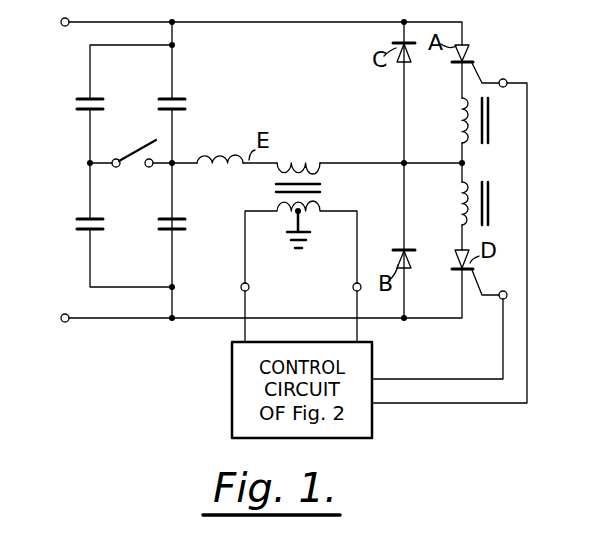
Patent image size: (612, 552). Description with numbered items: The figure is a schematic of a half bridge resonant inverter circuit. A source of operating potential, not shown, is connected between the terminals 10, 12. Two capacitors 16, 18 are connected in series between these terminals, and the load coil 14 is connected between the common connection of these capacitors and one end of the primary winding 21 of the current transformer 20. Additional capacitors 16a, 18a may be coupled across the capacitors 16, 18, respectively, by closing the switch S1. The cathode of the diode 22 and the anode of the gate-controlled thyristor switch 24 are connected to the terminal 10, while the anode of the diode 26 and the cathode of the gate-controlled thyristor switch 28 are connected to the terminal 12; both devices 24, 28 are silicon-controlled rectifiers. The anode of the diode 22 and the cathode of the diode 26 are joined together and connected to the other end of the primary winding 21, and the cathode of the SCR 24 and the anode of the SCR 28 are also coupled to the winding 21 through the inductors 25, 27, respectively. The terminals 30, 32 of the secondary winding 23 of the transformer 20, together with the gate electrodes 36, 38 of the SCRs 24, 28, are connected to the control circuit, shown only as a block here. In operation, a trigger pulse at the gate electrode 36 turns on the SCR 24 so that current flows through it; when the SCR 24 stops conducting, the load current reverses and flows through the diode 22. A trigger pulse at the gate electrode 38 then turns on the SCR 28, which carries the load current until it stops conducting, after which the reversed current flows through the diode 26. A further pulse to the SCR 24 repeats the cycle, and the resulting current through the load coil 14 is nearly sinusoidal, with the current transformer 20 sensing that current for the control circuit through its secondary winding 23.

The terminal 10 is at (61, 22).
The terminal 12 is at (61, 318).
The load coil 14 is at (222, 152).
The capacitor 16 is at (186, 98).
The additional capacitor 16a is at (96, 98).
The capacitor 18 is at (186, 230).
The additional capacitor 18a is at (96, 230).
The current transformer 20 is at (315, 280).
The primary winding 21 is at (296, 160).
The diode 22 is at (410, 60).
The secondary winding 23 is at (310, 213).
The gate-controlled thyristor switch 24 is at (468, 47).
The inductor 25 is at (489, 118).
The diode 26 is at (410, 272).
The inductor 27 is at (489, 208).
The gate-controlled thyristor switch 28 is at (459, 252).
The terminal 30 is at (241, 290).
The terminal 32 is at (353, 290).
The gate electrode 36 is at (512, 66).
The gate electrode 38 is at (504, 272).
The switch S1 is at (134, 147).